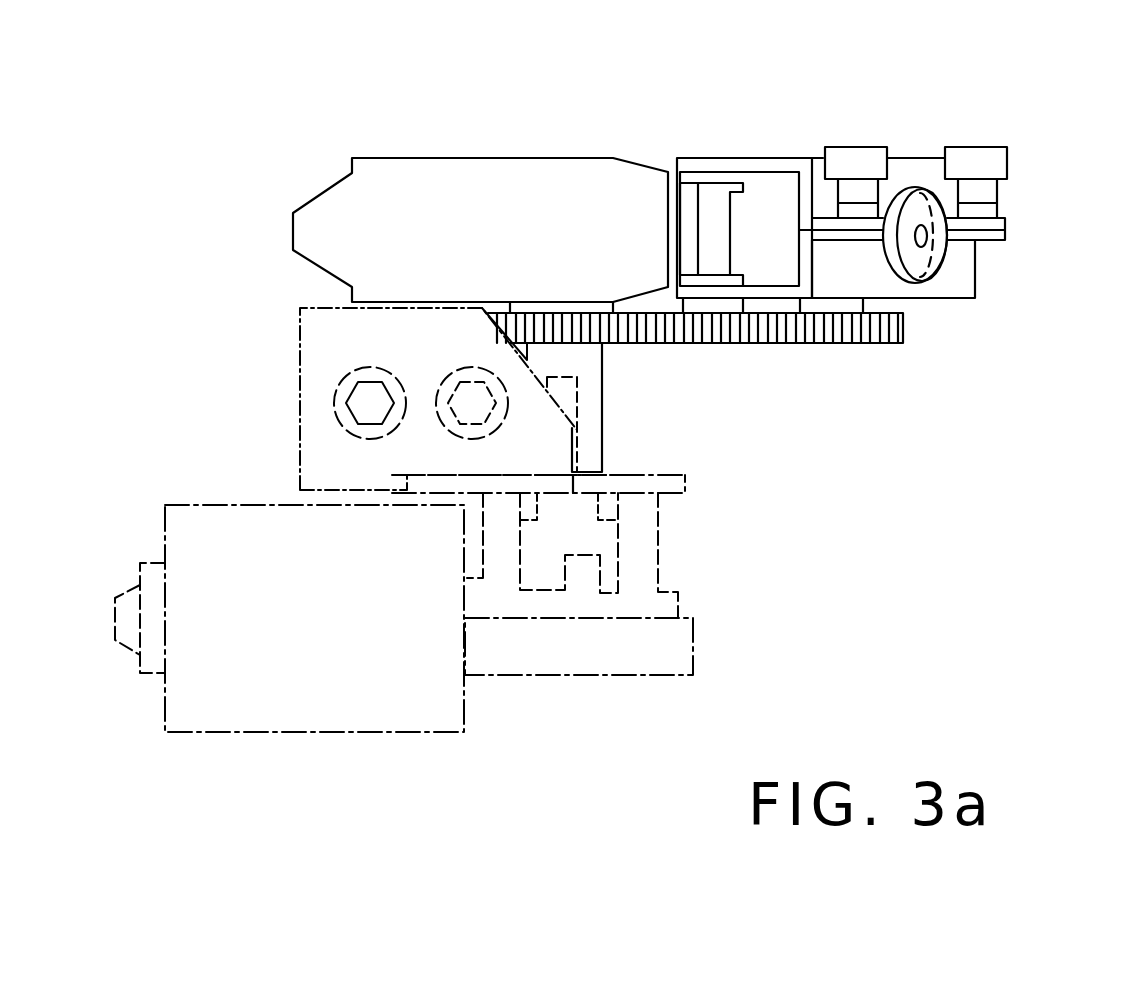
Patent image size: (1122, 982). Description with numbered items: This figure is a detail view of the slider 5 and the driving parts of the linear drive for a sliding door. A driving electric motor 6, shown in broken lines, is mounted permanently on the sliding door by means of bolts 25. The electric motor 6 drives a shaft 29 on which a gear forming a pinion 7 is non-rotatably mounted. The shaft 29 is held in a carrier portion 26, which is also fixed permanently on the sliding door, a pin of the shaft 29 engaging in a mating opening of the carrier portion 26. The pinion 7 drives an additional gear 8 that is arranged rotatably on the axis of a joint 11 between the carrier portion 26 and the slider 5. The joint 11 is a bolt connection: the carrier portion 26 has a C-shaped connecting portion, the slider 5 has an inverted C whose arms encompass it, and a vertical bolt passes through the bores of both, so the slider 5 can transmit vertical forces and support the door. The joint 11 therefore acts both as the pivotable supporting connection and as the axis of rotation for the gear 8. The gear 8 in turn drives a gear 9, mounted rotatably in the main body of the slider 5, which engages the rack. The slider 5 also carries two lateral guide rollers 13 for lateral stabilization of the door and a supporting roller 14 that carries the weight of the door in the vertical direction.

The carrier portion 26 is at (462, 180).
The joint 11 is at (706, 197).
The guide rollers 13 is at (967, 160).
The supporting roller 14 is at (937, 253).
The slider 5 is at (945, 293).
The pinion 7 is at (625, 328).
The gear 8 is at (706, 385).
The gear 9 is at (877, 343).
The bolts 25 is at (360, 413).
The shaft 29 is at (592, 445).
The electric motor 6 is at (423, 718).